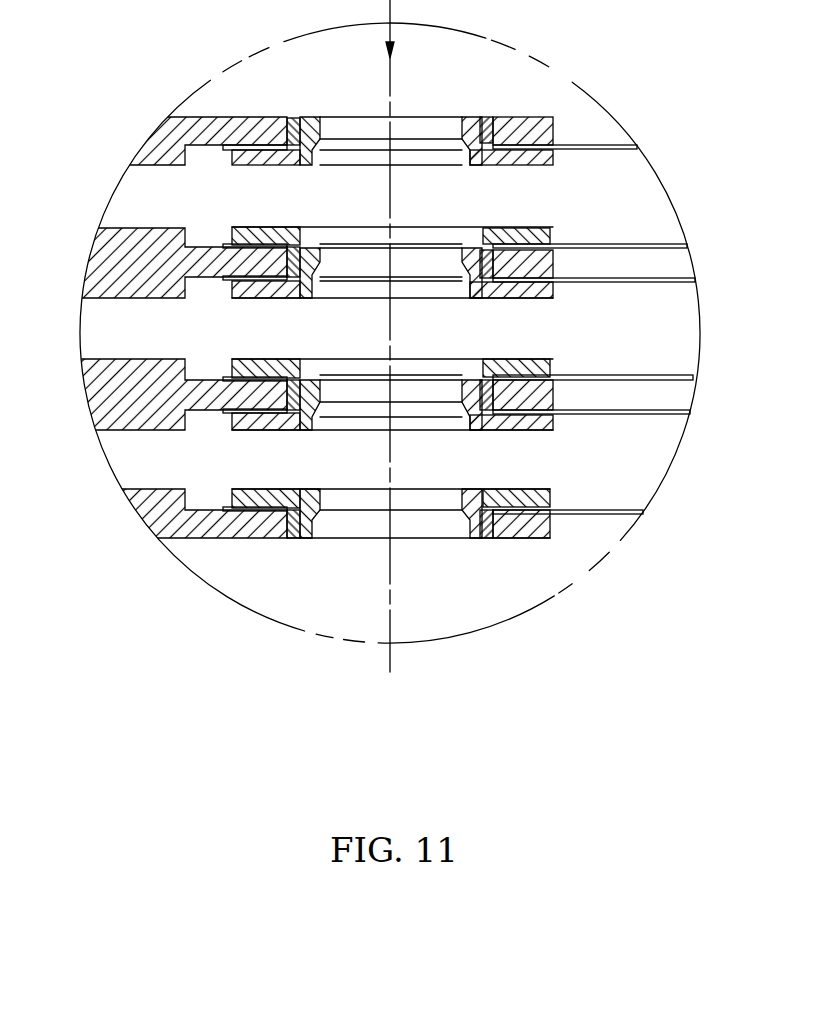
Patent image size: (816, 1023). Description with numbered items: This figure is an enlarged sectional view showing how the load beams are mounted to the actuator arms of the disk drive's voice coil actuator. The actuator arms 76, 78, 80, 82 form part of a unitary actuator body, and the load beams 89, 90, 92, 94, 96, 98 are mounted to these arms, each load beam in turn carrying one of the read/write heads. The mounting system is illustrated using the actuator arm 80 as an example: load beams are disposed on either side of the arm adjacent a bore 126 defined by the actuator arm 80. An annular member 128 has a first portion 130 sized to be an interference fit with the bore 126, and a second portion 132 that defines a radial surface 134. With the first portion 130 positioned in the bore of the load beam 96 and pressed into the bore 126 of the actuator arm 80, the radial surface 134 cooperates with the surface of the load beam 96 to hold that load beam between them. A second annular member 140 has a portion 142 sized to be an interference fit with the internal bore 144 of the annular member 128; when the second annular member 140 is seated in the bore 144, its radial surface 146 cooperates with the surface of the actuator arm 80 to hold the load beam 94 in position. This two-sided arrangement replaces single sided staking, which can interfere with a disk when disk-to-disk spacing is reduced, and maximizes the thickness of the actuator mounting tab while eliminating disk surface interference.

The actuator arm 76 is at (155, 522).
The actuator arm 78 is at (105, 405).
The actuator arm 80 is at (383, 266).
The actuator arm 82 is at (155, 142).
The load beam 89 is at (608, 516).
The load beam 90 is at (668, 415).
The load beam 92 is at (675, 377).
The load beam 94 is at (680, 284).
The load beam 96 is at (676, 244).
The load beam 98 is at (620, 146).
The bore 126 is at (493, 246).
The annular member 128 is at (246, 218).
The first portion 130 is at (296, 262).
The second portion 132 is at (549, 236).
The radial surface 134 is at (548, 290).
The second annular member 140 is at (514, 303).
The portion 142 is at (464, 270).
The internal bore 144 is at (315, 268).
The radial surface 146 is at (236, 272).